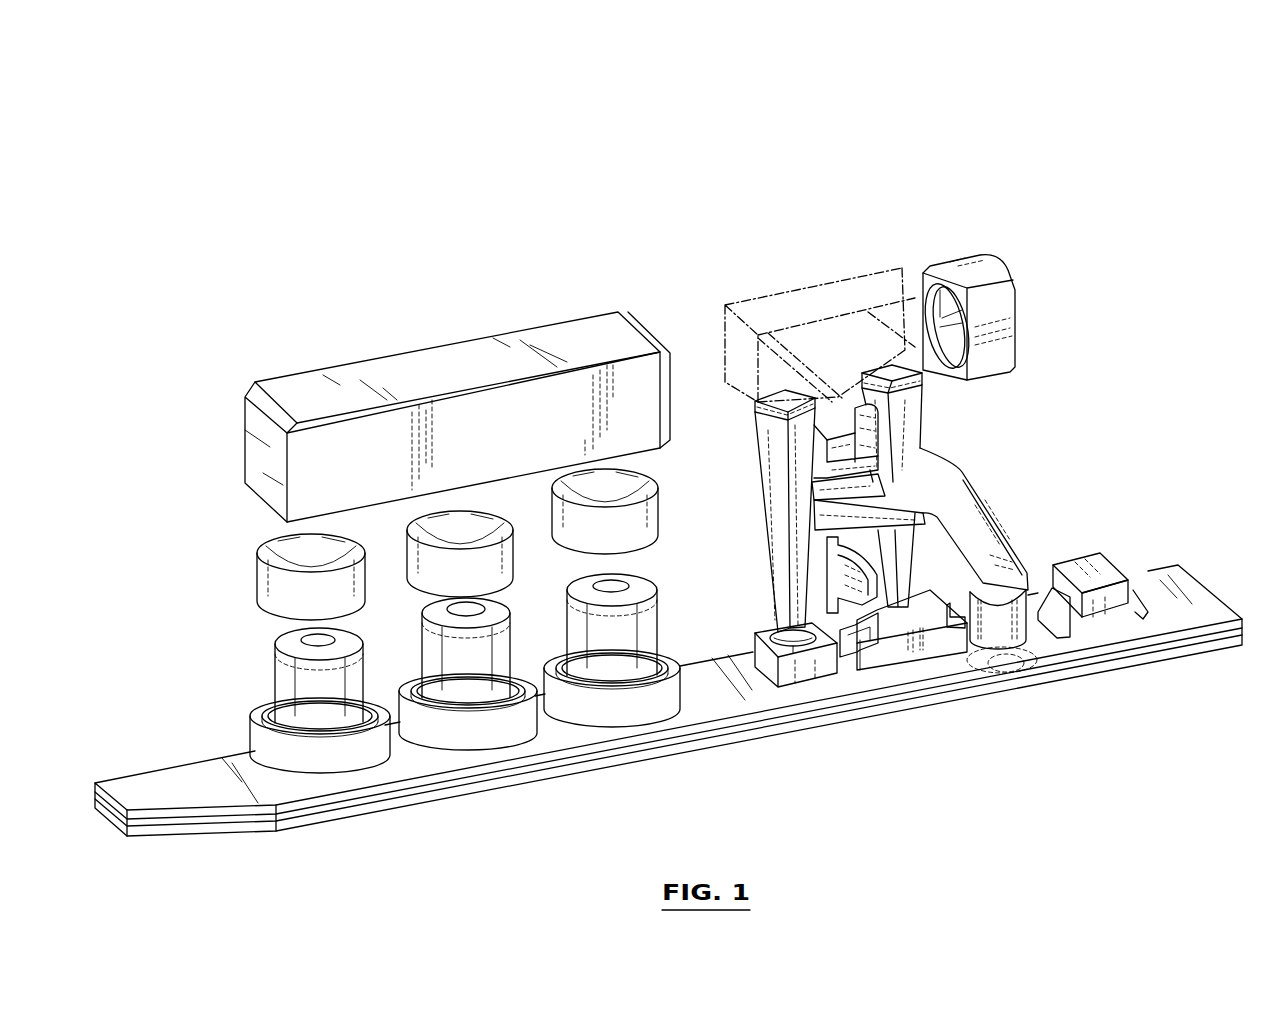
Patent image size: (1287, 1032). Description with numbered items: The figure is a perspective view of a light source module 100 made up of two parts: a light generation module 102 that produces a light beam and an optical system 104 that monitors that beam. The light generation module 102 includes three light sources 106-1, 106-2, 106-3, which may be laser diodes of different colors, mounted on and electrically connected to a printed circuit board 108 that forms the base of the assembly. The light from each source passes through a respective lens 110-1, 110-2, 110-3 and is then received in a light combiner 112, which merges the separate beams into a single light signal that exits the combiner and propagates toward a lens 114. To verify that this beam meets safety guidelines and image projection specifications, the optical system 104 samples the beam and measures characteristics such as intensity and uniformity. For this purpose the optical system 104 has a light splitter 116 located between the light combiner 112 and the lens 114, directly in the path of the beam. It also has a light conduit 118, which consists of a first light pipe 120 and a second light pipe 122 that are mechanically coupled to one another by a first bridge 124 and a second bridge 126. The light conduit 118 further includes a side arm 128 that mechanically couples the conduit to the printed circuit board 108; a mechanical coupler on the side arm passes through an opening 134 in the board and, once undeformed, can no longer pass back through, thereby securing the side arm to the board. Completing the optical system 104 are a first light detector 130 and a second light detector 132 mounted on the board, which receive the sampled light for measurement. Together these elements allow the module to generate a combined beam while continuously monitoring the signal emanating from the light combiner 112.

The light source module 100 is at (632, 120).
The light generation module 102 is at (595, 262).
The optical system 104 is at (708, 232).
The light source 106-1 is at (325, 695).
The light source 106-2 is at (465, 675).
The light source 106-3 is at (612, 660).
The printed circuit board 108 is at (178, 797).
The lens 110-1 is at (282, 611).
The lens 110-2 is at (432, 585).
The lens 110-3 is at (574, 543).
The light combiner 112 is at (318, 468).
The lens 114 is at (993, 267).
The light splitter 116 is at (888, 277).
The light conduit 118 is at (930, 444).
The first light pipe 120 is at (770, 445).
The second light pipe 122 is at (900, 410).
The first bridge 124 is at (812, 498).
The second bridge 126 is at (817, 542).
The side arm 128 is at (973, 530).
The first light detector 130 is at (800, 677).
The second light detector 132 is at (906, 650).
The opening 134 is at (1027, 633).